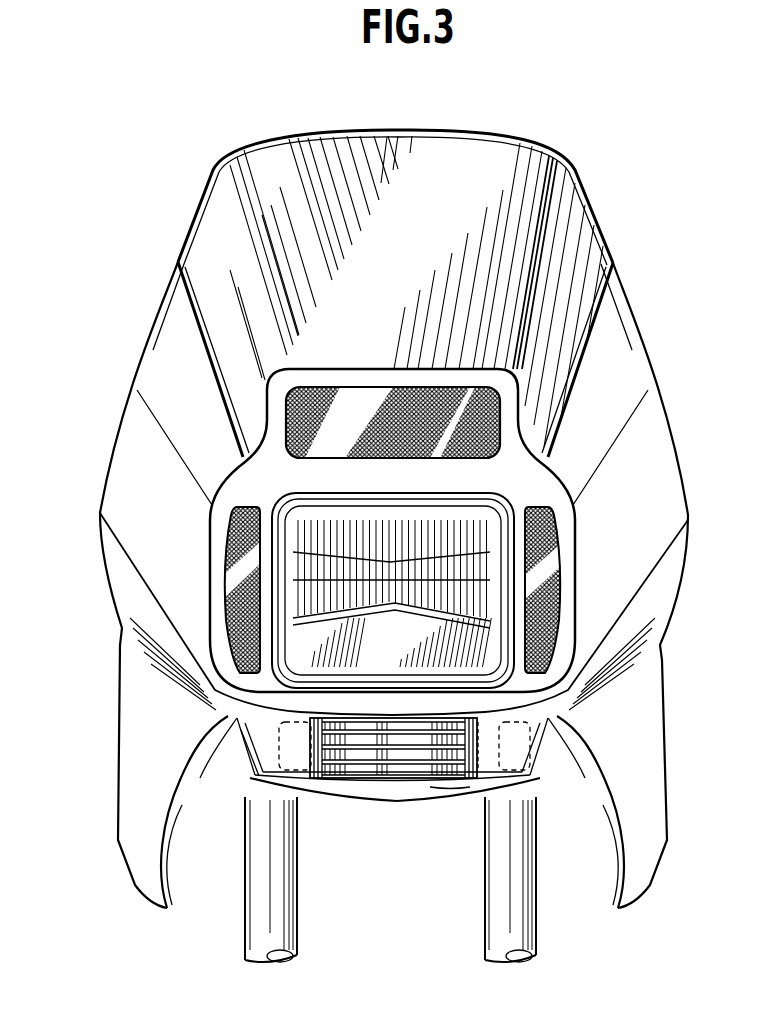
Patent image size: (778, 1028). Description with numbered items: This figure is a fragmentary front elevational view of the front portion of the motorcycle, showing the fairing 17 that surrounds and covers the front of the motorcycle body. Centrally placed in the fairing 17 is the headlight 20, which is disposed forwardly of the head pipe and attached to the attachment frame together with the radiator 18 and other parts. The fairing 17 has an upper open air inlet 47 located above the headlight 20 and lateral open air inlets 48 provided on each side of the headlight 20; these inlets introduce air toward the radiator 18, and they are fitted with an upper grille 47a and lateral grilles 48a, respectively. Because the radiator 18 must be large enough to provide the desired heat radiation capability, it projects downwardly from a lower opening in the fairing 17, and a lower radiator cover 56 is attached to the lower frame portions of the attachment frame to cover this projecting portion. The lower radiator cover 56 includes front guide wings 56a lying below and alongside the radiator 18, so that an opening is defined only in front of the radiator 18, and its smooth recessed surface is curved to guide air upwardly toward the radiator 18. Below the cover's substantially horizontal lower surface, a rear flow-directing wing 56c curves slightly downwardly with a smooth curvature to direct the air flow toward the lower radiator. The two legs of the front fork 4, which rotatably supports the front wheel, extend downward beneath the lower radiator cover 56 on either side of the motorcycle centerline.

The fairing 17 is at (607, 244).
The upper open air inlet 47 is at (413, 392).
The upper grille 47a is at (457, 396).
The headlight 20 is at (480, 530).
The lateral open air inlets 48 is at (220, 553).
The lateral grilles 48a is at (228, 588).
The radiator 18 is at (381, 790).
The lower radiator cover 56 is at (411, 808).
The front guide wings 56a is at (297, 788).
The rear flow-directing wing 56c is at (447, 796).
The front fork 4 is at (256, 893).